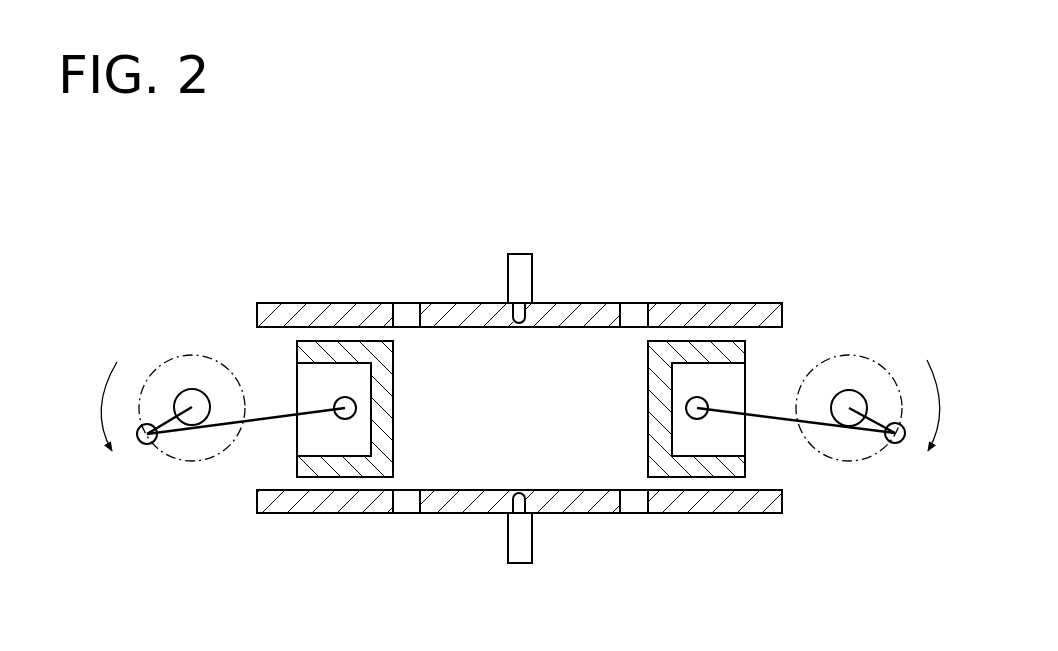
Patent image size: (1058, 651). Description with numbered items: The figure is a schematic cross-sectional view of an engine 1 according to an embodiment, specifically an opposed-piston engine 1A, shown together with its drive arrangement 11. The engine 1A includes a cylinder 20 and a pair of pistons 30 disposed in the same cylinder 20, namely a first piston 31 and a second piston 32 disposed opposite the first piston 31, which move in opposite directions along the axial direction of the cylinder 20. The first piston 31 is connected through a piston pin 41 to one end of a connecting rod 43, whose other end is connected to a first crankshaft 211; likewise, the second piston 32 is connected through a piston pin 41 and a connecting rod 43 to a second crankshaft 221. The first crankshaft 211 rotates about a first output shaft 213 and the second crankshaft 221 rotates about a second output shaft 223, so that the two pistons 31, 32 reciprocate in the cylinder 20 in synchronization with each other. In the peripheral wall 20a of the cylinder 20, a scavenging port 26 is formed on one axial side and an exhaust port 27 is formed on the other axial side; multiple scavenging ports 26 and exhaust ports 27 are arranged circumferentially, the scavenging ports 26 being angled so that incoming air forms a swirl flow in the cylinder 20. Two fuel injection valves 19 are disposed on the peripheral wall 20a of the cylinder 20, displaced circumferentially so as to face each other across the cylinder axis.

The engine 1 is at (517, 378).
The engine 1A is at (683, 180).
The drive mechanism 11 is at (720, 238).
The fuel injection valve 19 is at (516, 254).
The cylinder 20 is at (727, 300).
The peripheral wall 20a is at (738, 508).
The scavenging port 26 is at (405, 308).
The exhaust port 27 is at (636, 308).
The piston 30 is at (514, 409).
The first piston 31 is at (393, 398).
The second piston 32 is at (648, 397).
The piston pin 41 is at (340, 419).
The connecting rod 43 is at (270, 421).
The first crankshaft 211 is at (155, 359).
The first output shaft 213 is at (197, 389).
The second crankshaft 221 is at (879, 349).
The second output shaft 223 is at (849, 389).